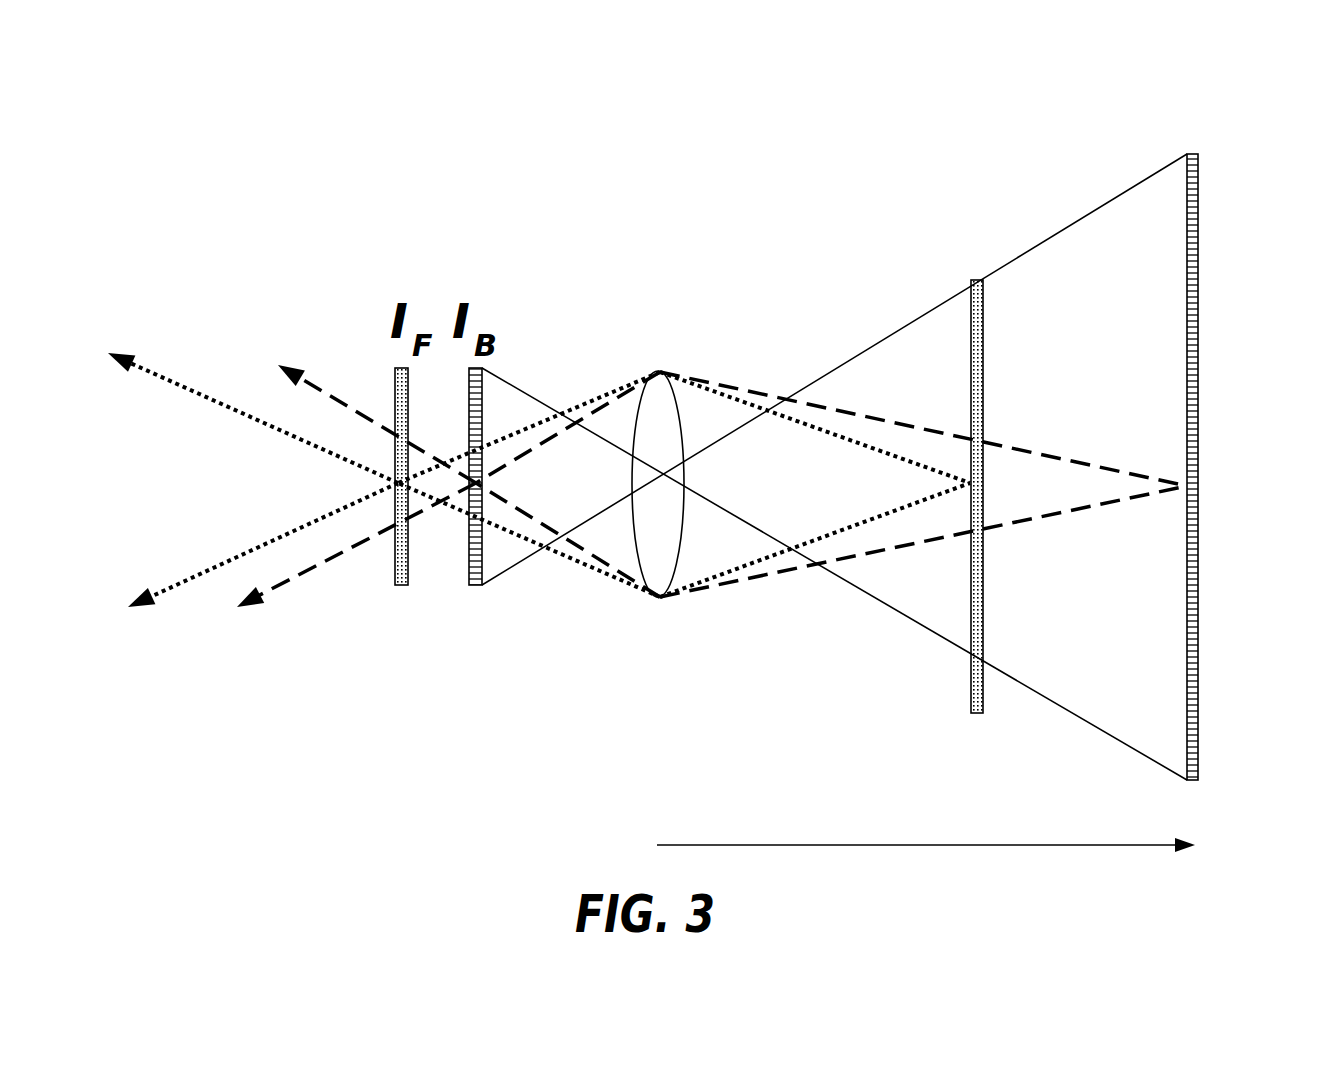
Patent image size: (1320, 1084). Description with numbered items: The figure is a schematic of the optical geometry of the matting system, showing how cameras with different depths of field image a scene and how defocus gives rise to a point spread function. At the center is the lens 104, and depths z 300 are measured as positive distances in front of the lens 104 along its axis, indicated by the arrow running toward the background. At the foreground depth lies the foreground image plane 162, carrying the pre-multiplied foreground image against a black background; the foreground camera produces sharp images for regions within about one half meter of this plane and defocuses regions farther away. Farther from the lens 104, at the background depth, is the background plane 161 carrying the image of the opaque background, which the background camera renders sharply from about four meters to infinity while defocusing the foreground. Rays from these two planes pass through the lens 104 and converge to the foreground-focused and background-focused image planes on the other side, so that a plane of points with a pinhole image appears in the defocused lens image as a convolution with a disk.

The lens 104 is at (663, 371).
The background plane 161 is at (1198, 626).
The foreground image plane 162 is at (983, 324).
The depths z 300 is at (866, 847).